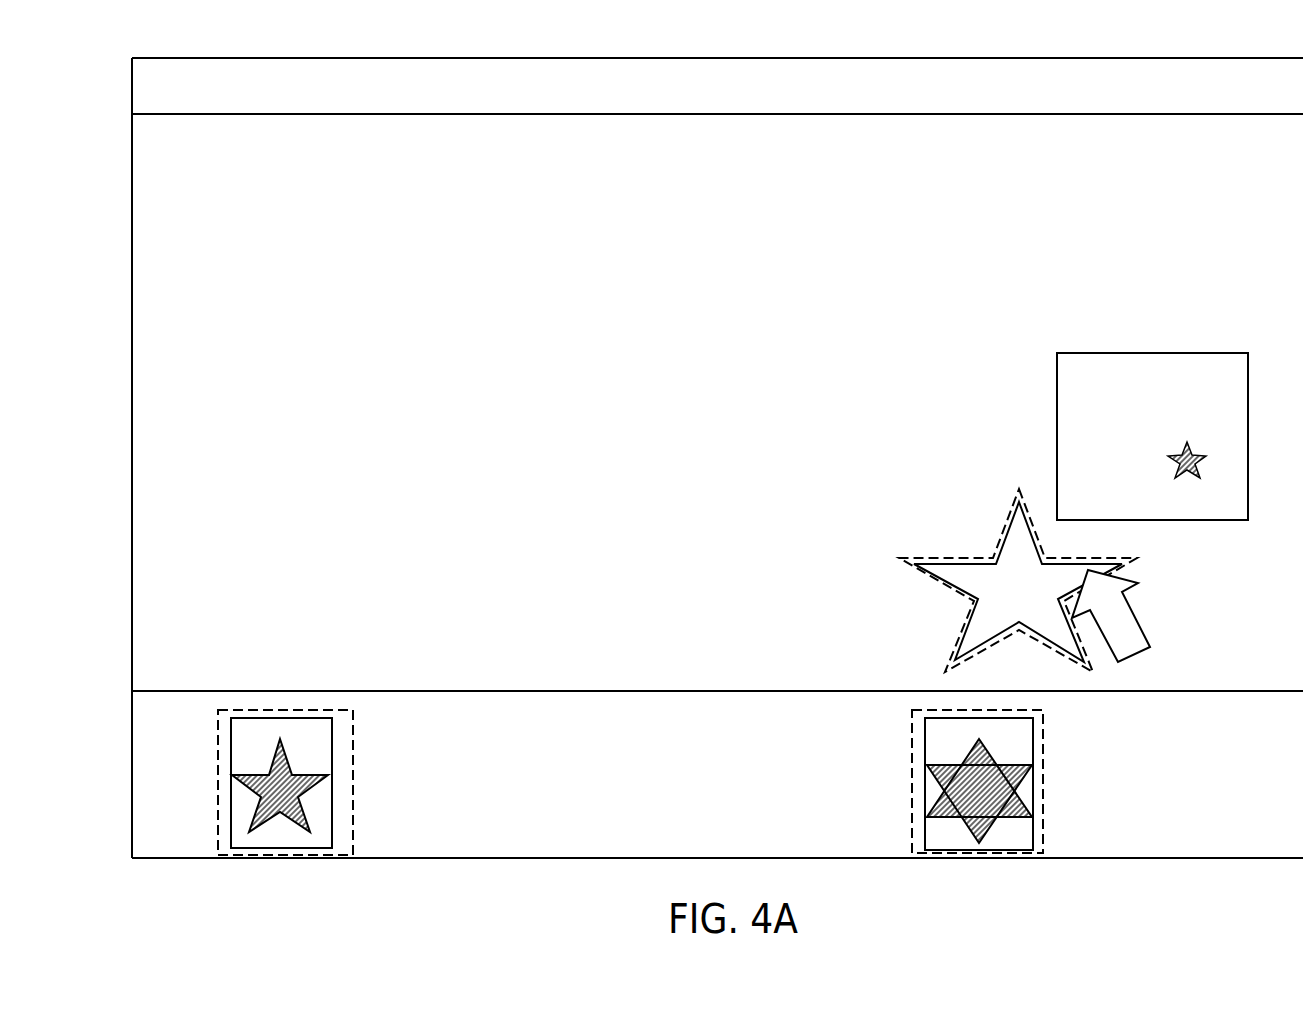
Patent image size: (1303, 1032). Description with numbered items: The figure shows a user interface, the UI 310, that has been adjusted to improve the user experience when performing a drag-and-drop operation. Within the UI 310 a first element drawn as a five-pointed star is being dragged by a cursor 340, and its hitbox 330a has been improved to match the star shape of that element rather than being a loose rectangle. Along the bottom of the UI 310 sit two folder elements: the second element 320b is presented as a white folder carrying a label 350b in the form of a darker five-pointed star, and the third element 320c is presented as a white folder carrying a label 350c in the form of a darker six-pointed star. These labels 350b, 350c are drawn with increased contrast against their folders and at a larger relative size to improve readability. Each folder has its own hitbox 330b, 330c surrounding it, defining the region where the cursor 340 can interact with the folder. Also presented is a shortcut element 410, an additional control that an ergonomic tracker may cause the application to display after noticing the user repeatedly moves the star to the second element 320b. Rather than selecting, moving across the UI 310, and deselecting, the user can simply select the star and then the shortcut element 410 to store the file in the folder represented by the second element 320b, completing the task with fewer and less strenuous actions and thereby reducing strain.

The UI 310 is at (828, 69).
The shortcut element 410 is at (1145, 353).
The second element 320b is at (1022, 533).
The hitbox 330a is at (908, 565).
The cursor 340 is at (1135, 612).
The label 350b is at (308, 773).
The hitbox 330b is at (353, 778).
The hitbox 330c is at (910, 785).
The third element 320c is at (1020, 745).
The label 350c is at (1015, 800).